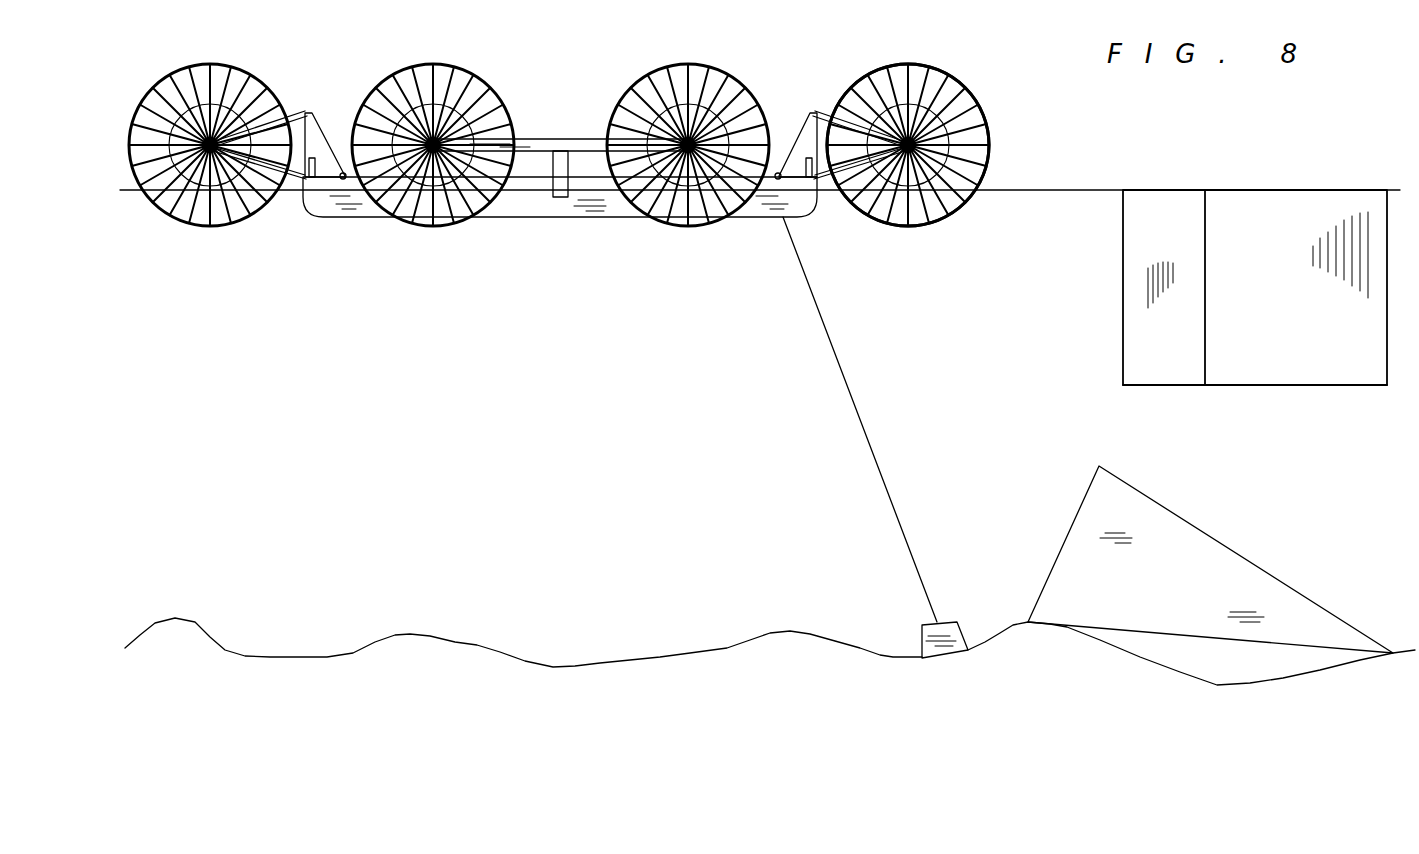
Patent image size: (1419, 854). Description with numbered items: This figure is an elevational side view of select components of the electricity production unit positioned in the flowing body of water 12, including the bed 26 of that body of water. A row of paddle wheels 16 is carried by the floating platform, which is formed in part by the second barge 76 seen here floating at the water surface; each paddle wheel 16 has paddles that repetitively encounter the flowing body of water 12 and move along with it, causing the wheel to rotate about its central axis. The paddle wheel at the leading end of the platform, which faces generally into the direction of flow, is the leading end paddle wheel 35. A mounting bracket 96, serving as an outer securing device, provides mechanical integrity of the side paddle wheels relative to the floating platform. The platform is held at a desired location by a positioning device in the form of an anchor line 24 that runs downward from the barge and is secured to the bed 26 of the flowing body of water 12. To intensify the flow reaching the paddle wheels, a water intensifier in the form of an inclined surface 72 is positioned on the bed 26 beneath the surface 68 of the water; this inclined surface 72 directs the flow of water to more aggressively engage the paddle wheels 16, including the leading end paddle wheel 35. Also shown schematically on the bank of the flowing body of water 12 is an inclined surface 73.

The paddle wheels 16 is at (250, 70).
The leading end paddle wheel 35 is at (992, 131).
The mounting bracket 96 is at (548, 138).
The second barge 76 is at (550, 218).
The anchor line 24 is at (873, 457).
The bed 26 is at (563, 663).
The inclined surface 72 is at (1209, 537).
The flowing body of water 12 is at (1177, 217).
The surface 68 is at (1265, 190).
The inclined surface 73 is at (1235, 387).